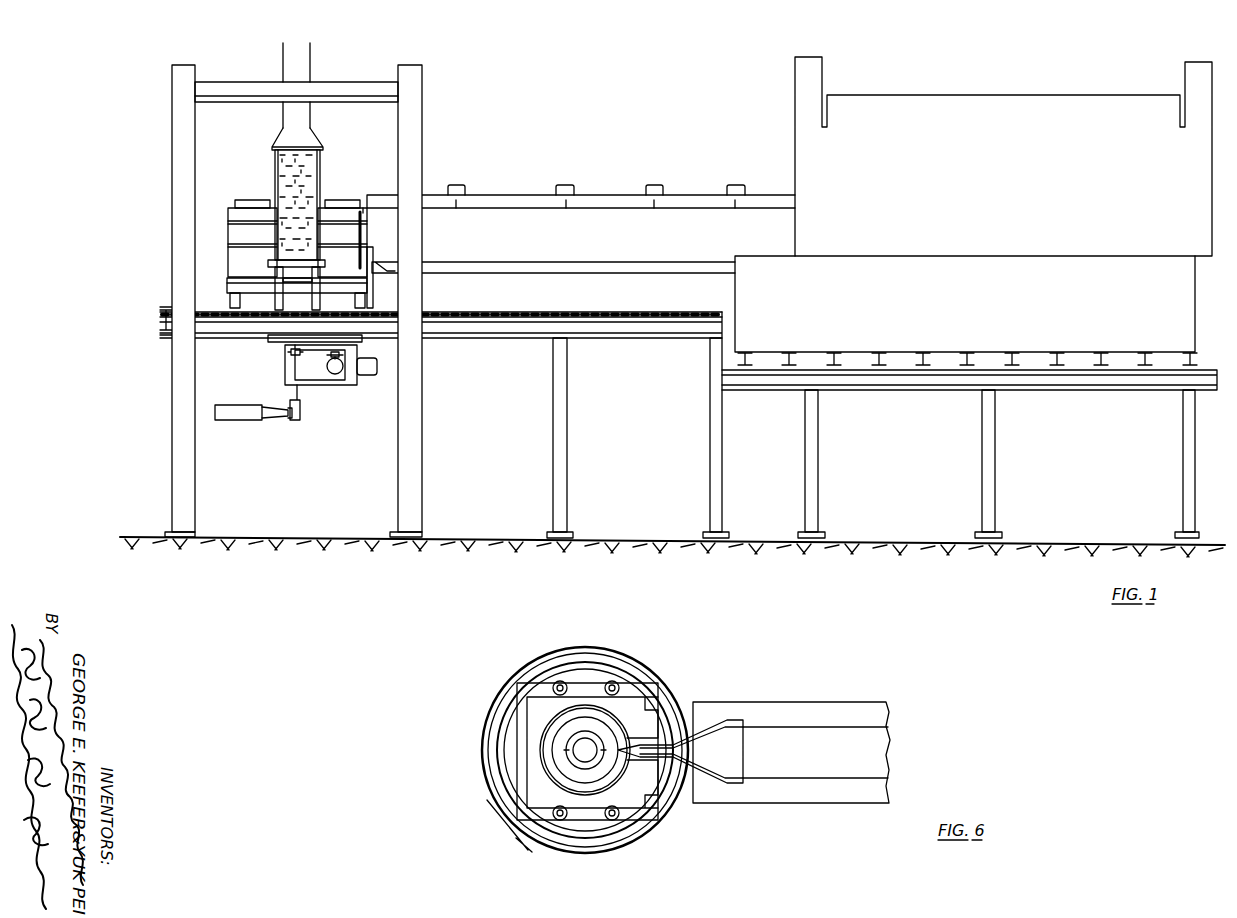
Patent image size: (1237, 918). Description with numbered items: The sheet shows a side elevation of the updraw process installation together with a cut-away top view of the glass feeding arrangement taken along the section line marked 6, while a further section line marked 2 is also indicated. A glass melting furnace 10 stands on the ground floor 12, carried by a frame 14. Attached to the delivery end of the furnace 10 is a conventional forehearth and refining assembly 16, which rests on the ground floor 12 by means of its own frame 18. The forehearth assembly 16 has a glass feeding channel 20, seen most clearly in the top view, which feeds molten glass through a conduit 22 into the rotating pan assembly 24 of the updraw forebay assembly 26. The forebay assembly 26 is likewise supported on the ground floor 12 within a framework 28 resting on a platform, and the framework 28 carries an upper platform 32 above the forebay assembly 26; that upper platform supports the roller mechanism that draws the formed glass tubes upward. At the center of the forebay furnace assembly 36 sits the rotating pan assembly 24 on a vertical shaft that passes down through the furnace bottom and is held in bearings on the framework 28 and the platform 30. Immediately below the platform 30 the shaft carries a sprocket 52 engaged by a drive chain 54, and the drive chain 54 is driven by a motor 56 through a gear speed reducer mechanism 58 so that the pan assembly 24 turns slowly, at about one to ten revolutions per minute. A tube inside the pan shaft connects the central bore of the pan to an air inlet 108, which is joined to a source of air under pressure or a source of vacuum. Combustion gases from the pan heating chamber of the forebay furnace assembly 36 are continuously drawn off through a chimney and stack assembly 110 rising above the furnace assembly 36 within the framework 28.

In FIG. 1, the section line 2- 2 is at (58, 173).
In FIG. 1, the section line 6- 6 is at (220, 148).
In FIG. 1, the glass melting furnace 10 is at (1010, 183).
In FIG. 1, the ground floor 12 is at (622, 537).
In FIG. 1, the frame 14 is at (818, 475).
In FIG. 1, the forehearth and refining assembly 16 is at (607, 195).
In FIG. 1, the frame 18 is at (553, 386).
In FIG. 6, the glass feeding channel 20 is at (785, 737).
In FIG. 6, the conduit 22 is at (653, 747).
In FIG. 6, the rotating pan assembly 24 is at (603, 768).
In FIG. 1, the updraw forebay assembly 26 is at (212, 283).
In FIG. 6, the updraw forebay assembly 26 is at (647, 666).
In FIG. 1, the framework 28 is at (172, 444).
In FIG. 1, the platform 30 is at (462, 312).
In FIG. 1, the upper platform 32 is at (354, 92).
In FIG. 1, the furnace assembly 36 is at (228, 205).
In FIG. 6, the furnace assembly 36 is at (490, 708).
In FIG. 1, the sprocket 52 is at (289, 351).
In FIG. 1, the drive chain 54 is at (311, 359).
In FIG. 1, the motor 56 is at (368, 376).
In FIG. 1, the gear speed reducer mechanism 58 is at (336, 374).
In FIG. 1, the air inlet 108 is at (232, 415).
In FIG. 1, the chimney and stack assembly 110 is at (324, 157).